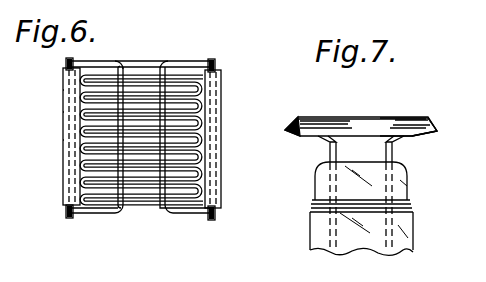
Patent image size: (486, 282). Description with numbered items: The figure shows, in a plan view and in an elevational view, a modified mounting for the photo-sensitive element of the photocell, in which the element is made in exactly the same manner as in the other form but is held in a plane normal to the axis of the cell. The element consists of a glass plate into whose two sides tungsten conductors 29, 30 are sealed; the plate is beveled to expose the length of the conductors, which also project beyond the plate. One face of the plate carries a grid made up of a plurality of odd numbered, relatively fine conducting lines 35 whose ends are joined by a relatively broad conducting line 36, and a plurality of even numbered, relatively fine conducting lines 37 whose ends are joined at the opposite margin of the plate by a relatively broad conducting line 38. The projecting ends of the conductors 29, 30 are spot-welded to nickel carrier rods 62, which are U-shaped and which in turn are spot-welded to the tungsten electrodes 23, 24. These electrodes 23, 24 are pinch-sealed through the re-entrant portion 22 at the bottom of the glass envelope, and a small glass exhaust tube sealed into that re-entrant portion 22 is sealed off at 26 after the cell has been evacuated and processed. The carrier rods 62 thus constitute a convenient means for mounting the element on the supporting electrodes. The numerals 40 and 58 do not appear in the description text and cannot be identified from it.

In FIG. 7, the re-entrant portion 22 is at (408, 235).
In FIG. 7, the electrode 23 is at (328, 153).
In FIG. 7, the electrode 24 is at (393, 158).
In FIG. 6, the seal-off point 26 is at (32, 109).
In FIG. 6, the tungsten conductor 29 is at (66, 59).
In FIG. 7, the tungsten conductor 29 is at (320, 116).
In FIG. 6, the tungsten conductor 30 is at (214, 59).
In FIG. 7, the tungsten conductor 30 is at (432, 127).
In FIG. 6, the odd numbered conducting lines 35 is at (163, 211).
In FIG. 7, the odd numbered conducting lines 35 is at (393, 117).
In FIG. 6, the broad conducting line 36 is at (222, 107).
In FIG. 7, the broad conducting line 36 is at (438, 132).
In FIG. 6, the even numbered conducting lines 37 is at (150, 73).
In FIG. 6, the broad conducting line 38 is at (64, 183).
In FIG. 6, the coil element 40 is at (32, 86).
In FIG. 6, the coil element 58 is at (32, 137).
In FIG. 6, the carrier rods 62 is at (147, 56).
In FIG. 7, the carrier rods 62 is at (292, 133).